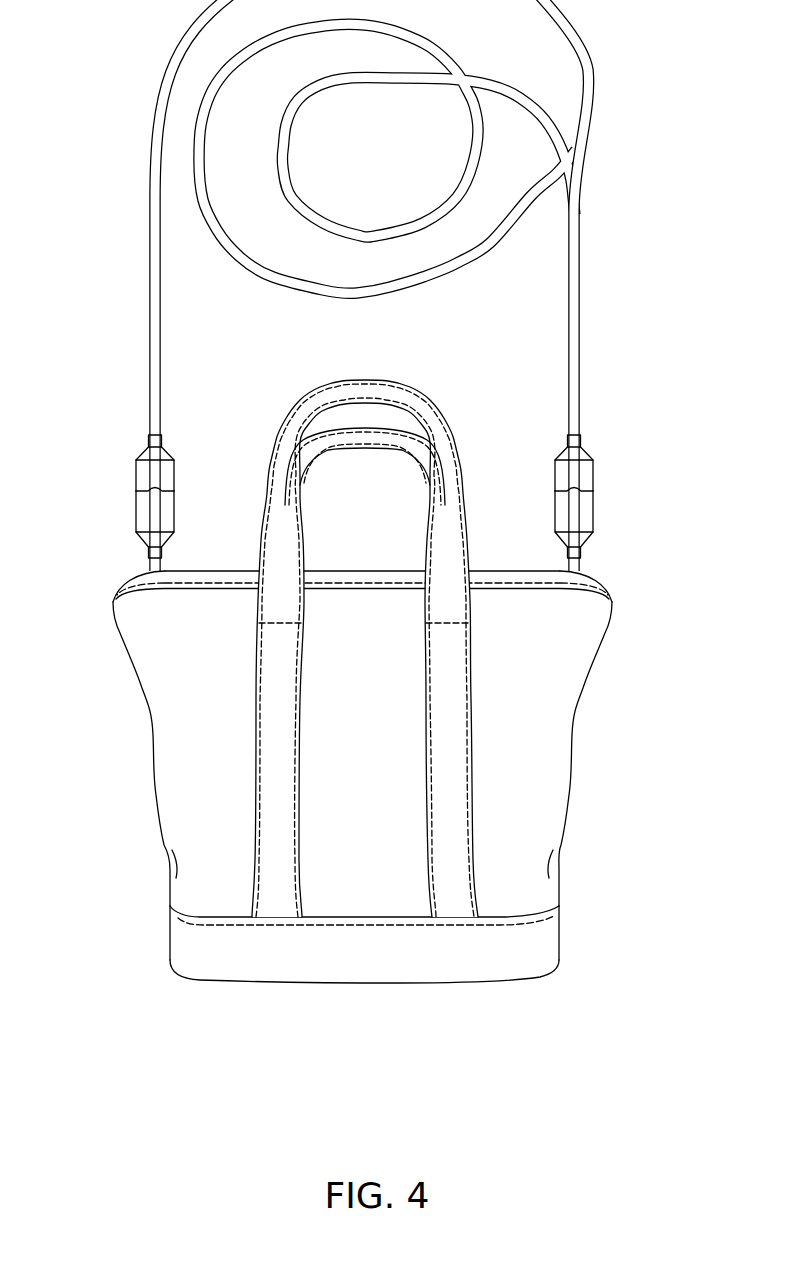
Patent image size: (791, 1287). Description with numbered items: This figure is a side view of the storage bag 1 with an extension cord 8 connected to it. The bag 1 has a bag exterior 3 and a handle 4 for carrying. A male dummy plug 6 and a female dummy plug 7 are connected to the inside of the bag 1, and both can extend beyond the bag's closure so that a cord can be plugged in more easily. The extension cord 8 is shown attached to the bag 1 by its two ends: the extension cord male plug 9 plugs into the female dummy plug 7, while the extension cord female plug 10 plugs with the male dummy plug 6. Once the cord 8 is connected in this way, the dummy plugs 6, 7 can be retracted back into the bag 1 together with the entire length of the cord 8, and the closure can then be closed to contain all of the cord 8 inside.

The bag 1 is at (363, 873).
The bag exterior 3 is at (557, 733).
The handle 4 is at (427, 417).
The male dummy plug 6 is at (138, 518).
The female dummy plug 7 is at (593, 528).
The extension cord 8 is at (586, 236).
The extension cord male plug 9 is at (593, 483).
The extension cord female plug 10 is at (138, 475).